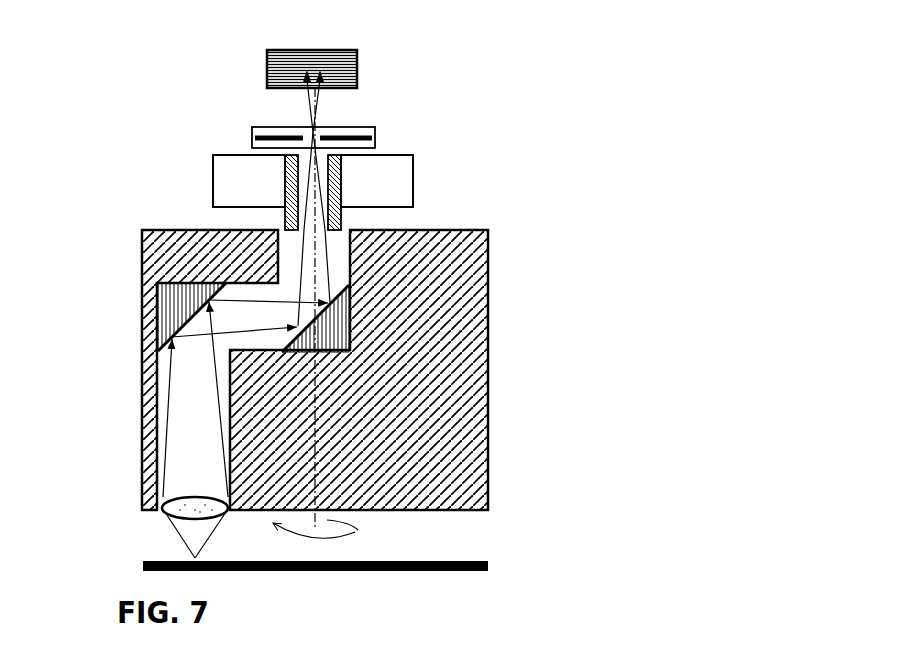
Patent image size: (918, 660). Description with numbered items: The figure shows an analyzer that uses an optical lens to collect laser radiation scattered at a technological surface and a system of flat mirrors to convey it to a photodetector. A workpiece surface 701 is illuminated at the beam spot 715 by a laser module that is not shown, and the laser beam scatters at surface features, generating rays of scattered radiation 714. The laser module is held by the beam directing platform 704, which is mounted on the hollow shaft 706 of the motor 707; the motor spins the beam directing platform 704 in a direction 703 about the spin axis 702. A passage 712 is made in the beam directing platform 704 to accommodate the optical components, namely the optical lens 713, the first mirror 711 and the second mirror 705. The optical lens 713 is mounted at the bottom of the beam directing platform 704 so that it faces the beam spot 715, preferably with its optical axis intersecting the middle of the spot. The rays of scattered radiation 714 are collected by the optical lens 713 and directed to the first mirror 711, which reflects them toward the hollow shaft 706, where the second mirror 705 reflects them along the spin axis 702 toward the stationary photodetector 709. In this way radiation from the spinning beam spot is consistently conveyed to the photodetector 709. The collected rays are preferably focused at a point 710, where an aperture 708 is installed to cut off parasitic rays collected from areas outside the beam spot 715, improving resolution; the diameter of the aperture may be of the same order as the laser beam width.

The workpiece surface 701 is at (489, 565).
The spin axis 702 is at (322, 272).
The direction of spin 703 is at (366, 530).
The beam directing platform 704 is at (140, 257).
The second mirror 705 is at (334, 337).
The hollow shaft 706 is at (343, 216).
The motor 707 is at (416, 183).
The aperture 708 is at (377, 138).
The photodetector 709 is at (361, 69).
The focal point 710 is at (304, 129).
The first mirror 711 is at (168, 302).
The passage 712 is at (190, 417).
The optical lens 713 is at (194, 496).
The rays of scattered radiation 714 is at (184, 528).
The beam spot 715 is at (184, 556).